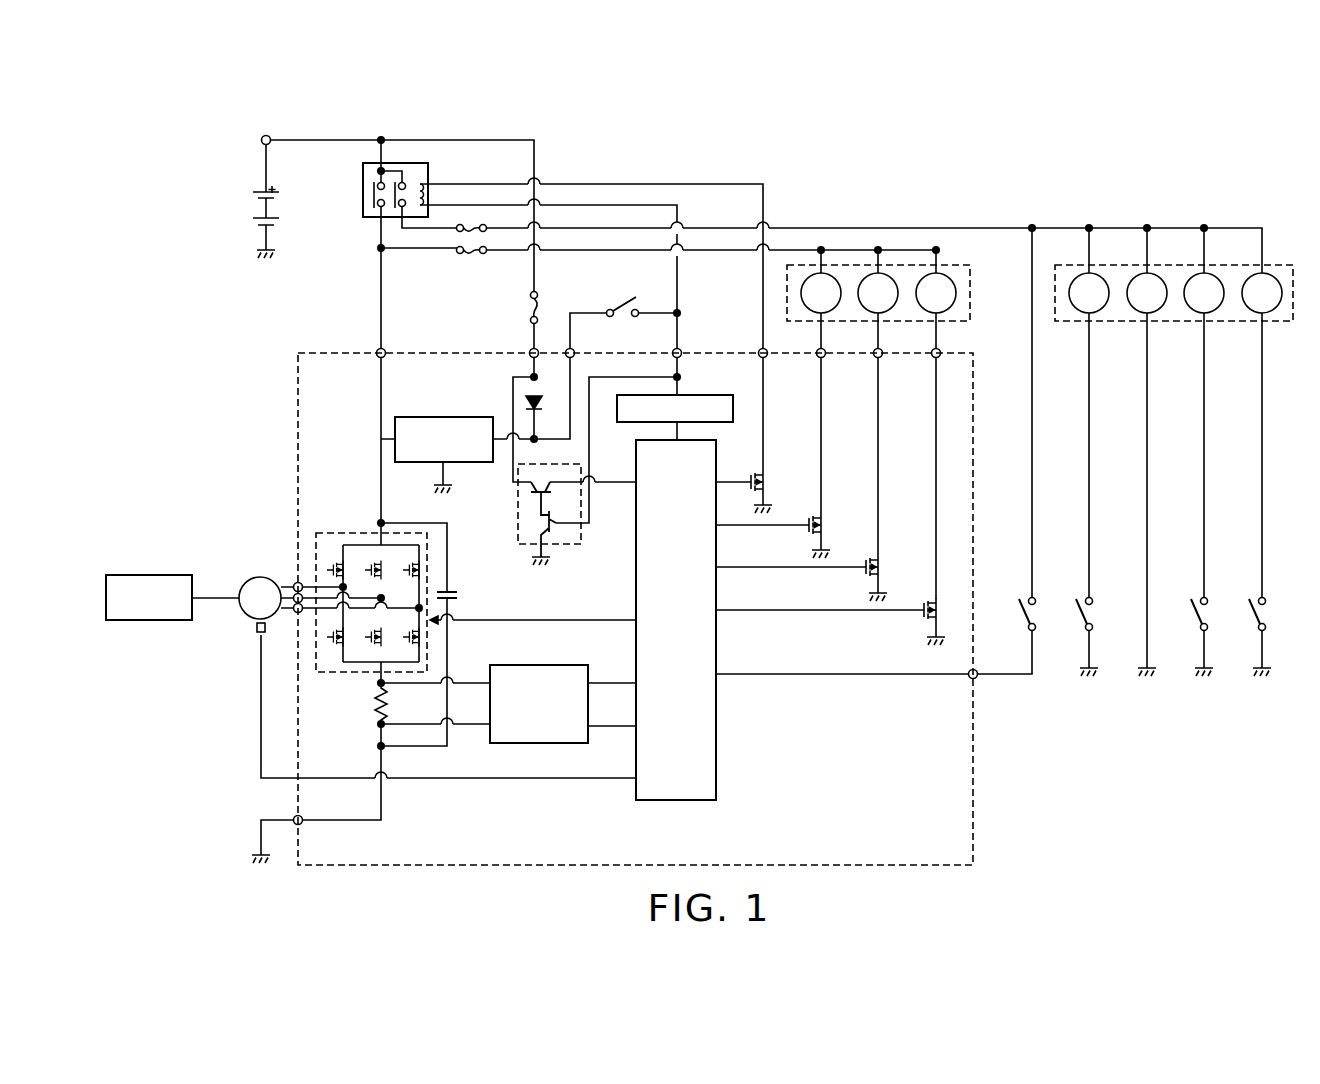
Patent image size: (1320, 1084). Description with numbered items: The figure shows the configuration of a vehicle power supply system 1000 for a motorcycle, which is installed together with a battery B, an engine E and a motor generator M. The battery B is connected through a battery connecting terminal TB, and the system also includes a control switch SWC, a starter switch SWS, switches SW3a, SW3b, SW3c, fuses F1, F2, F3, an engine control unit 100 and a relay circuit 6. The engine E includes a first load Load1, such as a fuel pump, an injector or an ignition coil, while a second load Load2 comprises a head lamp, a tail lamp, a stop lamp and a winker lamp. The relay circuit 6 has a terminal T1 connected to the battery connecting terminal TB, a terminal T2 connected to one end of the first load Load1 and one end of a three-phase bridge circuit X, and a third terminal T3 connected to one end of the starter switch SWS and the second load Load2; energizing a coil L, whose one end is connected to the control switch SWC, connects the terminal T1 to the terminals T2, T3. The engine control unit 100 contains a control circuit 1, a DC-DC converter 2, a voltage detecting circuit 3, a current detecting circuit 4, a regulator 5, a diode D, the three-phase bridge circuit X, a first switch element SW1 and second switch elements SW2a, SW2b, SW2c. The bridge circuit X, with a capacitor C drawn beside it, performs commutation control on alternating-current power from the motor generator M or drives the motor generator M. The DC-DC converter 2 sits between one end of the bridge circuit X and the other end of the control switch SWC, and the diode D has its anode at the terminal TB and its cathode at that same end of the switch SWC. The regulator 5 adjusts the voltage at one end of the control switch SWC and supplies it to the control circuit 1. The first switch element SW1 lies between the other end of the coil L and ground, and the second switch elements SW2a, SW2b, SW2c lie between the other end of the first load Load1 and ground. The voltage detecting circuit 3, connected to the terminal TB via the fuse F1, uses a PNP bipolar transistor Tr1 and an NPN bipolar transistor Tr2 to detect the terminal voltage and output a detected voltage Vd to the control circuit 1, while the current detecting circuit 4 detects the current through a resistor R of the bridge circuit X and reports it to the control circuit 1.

The vehicle power supply system 1000 is at (562, 895).
The engine control unit 100 is at (687, 609).
The control circuit 1 is at (701, 620).
The DC-DC converter 2 is at (444, 429).
The voltage detecting circuit 3 is at (521, 531).
The current detecting circuit 4 is at (556, 689).
The regulator 5 is at (675, 390).
The relay circuit 6 is at (378, 190).
The coil L is at (421, 159).
The terminal T1 is at (365, 166).
The terminal T2 is at (365, 230).
The third terminal T3 is at (406, 239).
The battery connecting terminal TB is at (263, 115).
The battery B is at (237, 186).
The fuse F1 is at (506, 311).
The fuse F2 is at (472, 275).
The fuse F3 is at (472, 195).
The control switch SWC is at (622, 291).
The starter switch SWS is at (1007, 629).
The first switch element SW1 is at (740, 460).
The second switch element SW2a is at (793, 494).
The second switch element SW2b is at (851, 535).
The second switch element SW2c is at (908, 579).
The switch SW3a is at (1062, 629).
The switch SW3b is at (1177, 629).
The switch SW3c is at (1236, 629).
The first load Load1 is at (878, 247).
The second load Load2 is at (1174, 246).
The diode D is at (547, 403).
The PNP bipolar transistor Tr1 is at (510, 498).
The NPN bipolar transistor Tr2 is at (554, 555).
The detected voltage Vd is at (564, 496).
The three-phase bridge circuit X is at (371, 561).
The capacitor C is at (462, 590).
The resistor R is at (359, 703).
The engine E is at (149, 571).
The motor generator M is at (260, 604).